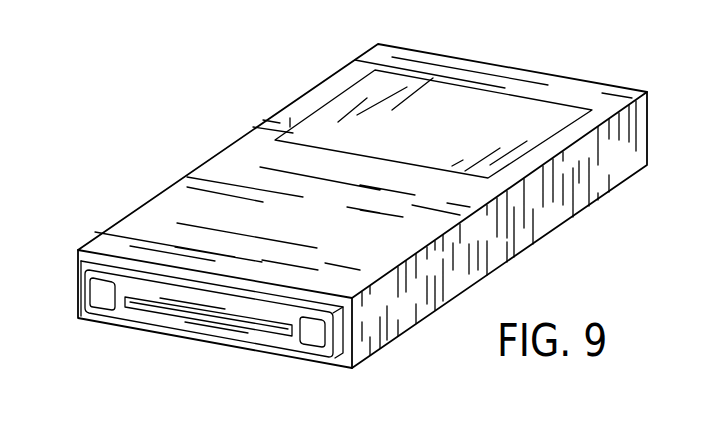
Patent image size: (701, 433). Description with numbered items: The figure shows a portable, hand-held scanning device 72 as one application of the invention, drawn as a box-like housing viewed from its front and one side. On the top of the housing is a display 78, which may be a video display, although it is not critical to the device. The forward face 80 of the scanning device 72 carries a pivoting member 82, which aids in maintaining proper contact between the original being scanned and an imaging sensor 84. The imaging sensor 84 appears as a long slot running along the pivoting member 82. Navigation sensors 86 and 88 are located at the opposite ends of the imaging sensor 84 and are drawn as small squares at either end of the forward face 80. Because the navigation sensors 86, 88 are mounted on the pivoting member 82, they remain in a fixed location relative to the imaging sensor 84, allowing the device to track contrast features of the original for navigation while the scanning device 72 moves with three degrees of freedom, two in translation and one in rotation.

The hand-held scanning device 72 is at (180, 200).
The display 78 is at (347, 103).
The forward face 80 is at (80, 262).
The pivoting member 82 is at (182, 333).
The imaging sensor 84 is at (270, 323).
The navigation sensor 86 is at (103, 306).
The navigation sensor 88 is at (315, 340).